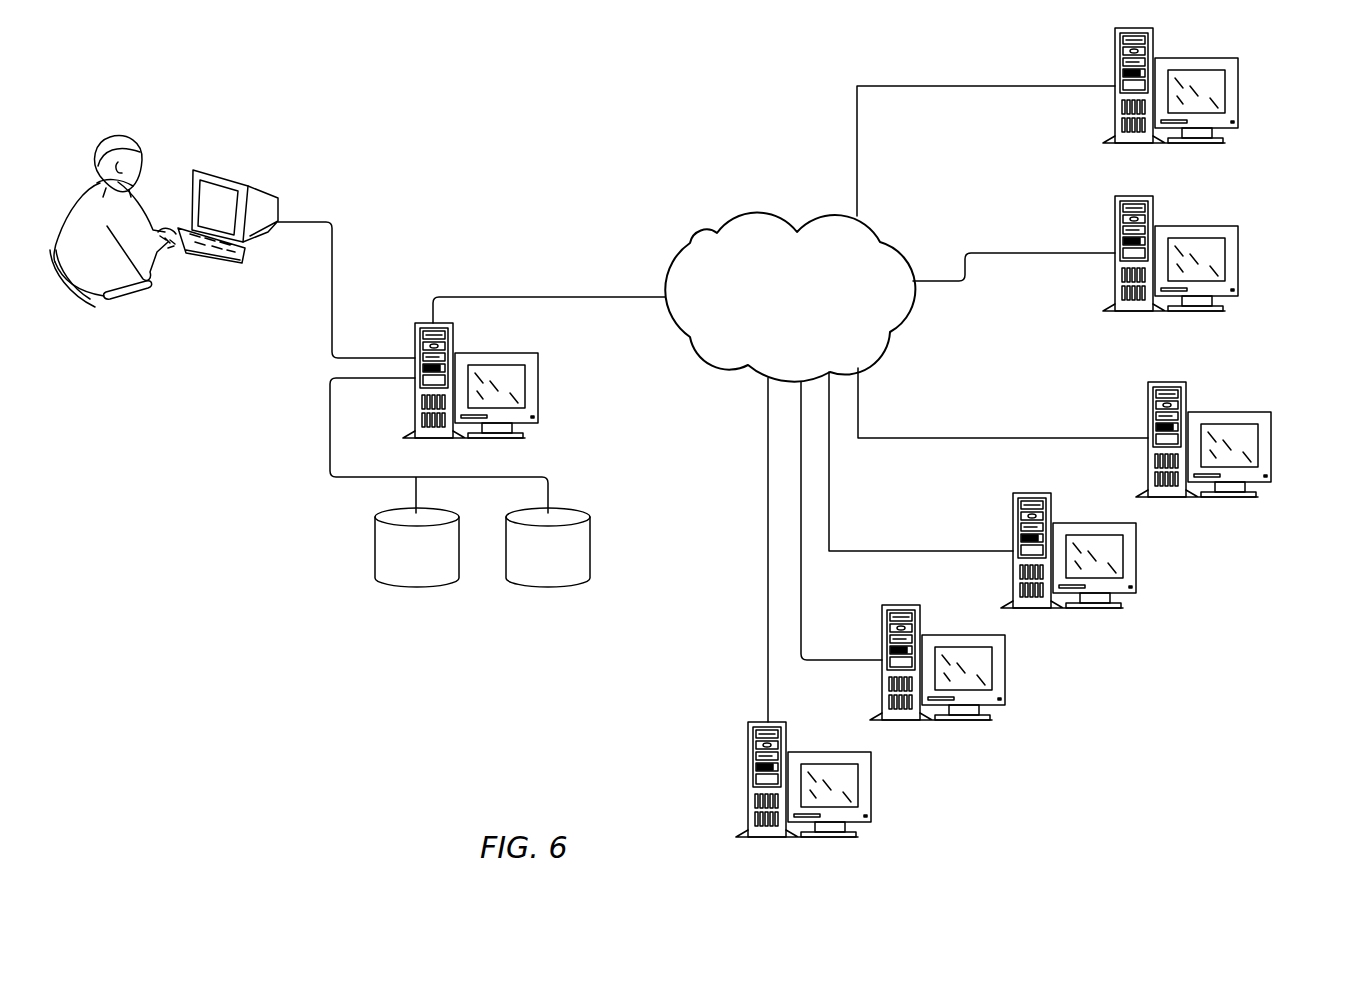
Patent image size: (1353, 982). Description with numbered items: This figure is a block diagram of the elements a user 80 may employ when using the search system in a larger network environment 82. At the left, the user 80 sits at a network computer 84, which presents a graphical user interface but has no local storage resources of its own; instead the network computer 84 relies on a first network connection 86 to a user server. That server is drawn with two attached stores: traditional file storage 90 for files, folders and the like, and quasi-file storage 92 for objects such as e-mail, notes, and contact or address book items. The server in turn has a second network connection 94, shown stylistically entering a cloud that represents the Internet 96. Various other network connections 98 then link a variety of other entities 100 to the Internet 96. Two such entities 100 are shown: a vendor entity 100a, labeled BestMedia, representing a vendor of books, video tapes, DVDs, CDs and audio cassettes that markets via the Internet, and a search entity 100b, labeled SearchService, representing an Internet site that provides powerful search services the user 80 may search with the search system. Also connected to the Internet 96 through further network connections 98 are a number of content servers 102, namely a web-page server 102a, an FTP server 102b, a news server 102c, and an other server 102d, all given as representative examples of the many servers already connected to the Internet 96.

The user 80 is at (173, 120).
The network environment 82 is at (555, 143).
The network computer 84 is at (228, 174).
The first network connection 86 is at (333, 283).
The traditional file storage 90 is at (404, 586).
The quasi-file storage 92 is at (535, 586).
The second network connection 94 is at (523, 297).
The Internet 96 is at (780, 319).
The other network connections 98 is at (967, 86).
The entities 100 is at (1272, 68).
The vendor entity 100a is at (1201, 57).
The search entity 100b is at (1200, 225).
The content servers 102 is at (1117, 686).
The web-page server 102a is at (1237, 424).
The FTP server 102b is at (1130, 550).
The news server 102c is at (1000, 665).
The other server 102d is at (872, 776).